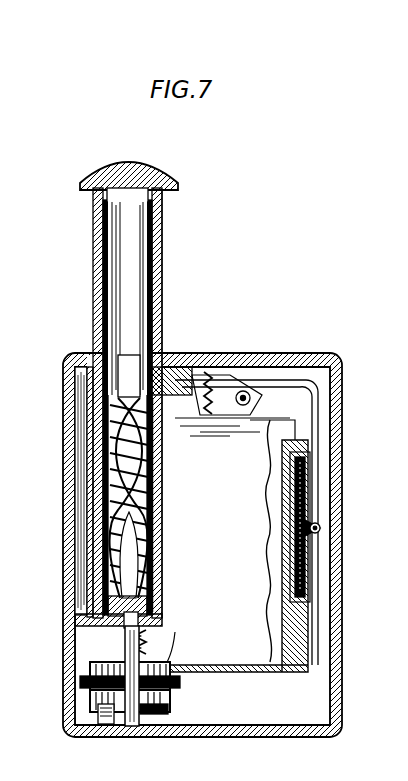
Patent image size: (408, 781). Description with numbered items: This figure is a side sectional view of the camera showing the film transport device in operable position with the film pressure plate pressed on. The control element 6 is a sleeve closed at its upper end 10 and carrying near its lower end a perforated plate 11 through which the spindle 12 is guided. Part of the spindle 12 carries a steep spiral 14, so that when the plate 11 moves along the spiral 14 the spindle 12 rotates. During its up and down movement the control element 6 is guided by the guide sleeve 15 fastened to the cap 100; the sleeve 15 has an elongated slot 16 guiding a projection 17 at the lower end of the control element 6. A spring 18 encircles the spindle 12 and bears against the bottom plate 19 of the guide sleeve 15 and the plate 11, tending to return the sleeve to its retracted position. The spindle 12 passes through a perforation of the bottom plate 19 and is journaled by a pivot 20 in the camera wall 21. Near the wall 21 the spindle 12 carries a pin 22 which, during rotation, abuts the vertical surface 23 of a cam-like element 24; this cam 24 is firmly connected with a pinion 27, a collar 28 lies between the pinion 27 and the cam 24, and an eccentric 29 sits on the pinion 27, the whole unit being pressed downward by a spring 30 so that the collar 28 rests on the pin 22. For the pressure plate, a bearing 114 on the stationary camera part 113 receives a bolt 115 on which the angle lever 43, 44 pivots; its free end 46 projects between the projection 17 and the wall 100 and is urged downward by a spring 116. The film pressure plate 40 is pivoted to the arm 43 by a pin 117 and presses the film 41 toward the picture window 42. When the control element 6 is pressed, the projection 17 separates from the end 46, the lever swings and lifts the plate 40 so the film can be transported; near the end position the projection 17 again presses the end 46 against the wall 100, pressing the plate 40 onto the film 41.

The cap 100 is at (268, 354).
The angle lever arm 44 is at (312, 358).
The free end of angle lever 46 is at (190, 356).
The camera wall 21 is at (248, 738).
The guide sleeve 15 is at (82, 540).
The control element 6 is at (165, 214).
The plate 11 is at (162, 340).
The upper end of sleeve 10 is at (160, 176).
The spindle 12 is at (120, 356).
The projection 17 is at (178, 398).
The steep spiral 14 is at (135, 466).
The spring 18 is at (140, 528).
The elongated slot 16 is at (156, 487).
The bottom plate 19 is at (160, 608).
The spring 116 is at (218, 372).
The bolt 115 is at (252, 399).
The angle lever arm 43 is at (324, 440).
The stationary camera part 113 is at (300, 422).
The bearing 114 is at (240, 418).
The picture window 42 is at (272, 512).
The film 41 is at (294, 547).
The film pressure plate 40 is at (306, 566).
The pin 117 is at (322, 527).
The pin 22 is at (88, 715).
The spring 30 is at (148, 644).
The eccentric 29 is at (176, 662).
The pinion 27 is at (172, 682).
The collar 28 is at (170, 700).
The pivot 20 is at (130, 734).
The vertical surface 23 is at (106, 732).
The cam-like element 24 is at (150, 714).